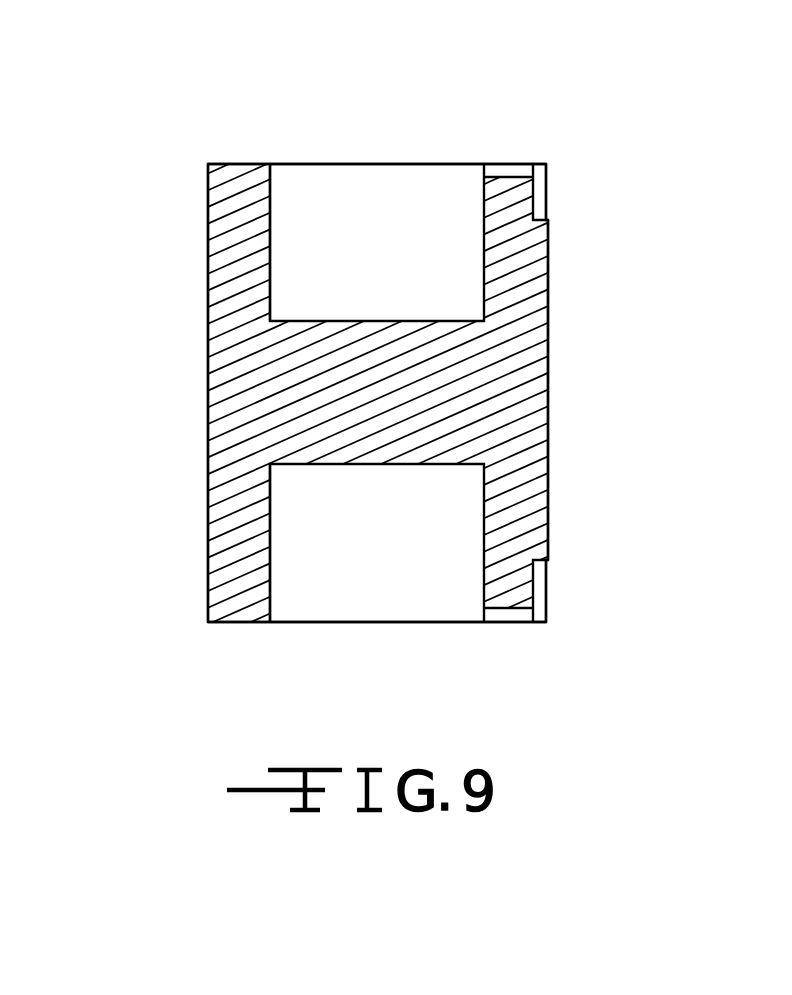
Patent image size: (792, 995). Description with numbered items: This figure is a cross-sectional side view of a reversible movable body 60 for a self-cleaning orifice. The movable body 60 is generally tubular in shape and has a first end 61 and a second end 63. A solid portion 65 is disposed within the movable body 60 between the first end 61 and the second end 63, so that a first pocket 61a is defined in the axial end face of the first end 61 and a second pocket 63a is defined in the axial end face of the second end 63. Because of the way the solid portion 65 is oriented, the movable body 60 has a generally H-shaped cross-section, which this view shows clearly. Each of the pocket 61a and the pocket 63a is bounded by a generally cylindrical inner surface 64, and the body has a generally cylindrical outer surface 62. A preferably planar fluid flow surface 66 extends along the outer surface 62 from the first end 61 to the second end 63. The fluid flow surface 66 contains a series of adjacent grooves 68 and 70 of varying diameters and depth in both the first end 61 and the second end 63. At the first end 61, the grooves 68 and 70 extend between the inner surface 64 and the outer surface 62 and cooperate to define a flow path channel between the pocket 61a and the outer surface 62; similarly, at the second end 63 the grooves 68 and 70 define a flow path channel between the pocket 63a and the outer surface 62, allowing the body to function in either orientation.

The movable body 60 is at (287, 138).
The first end 61 is at (225, 163).
The first pocket 61a is at (348, 217).
The outer surface 62 is at (208, 368).
The second end 63 is at (238, 623).
The second pocket 63a is at (435, 588).
The inner surface 64 is at (272, 213).
The solid portion 65 is at (397, 445).
The fluid flow surface 66 is at (549, 333).
The groove 68 is at (541, 206).
The groove 70 is at (507, 168).